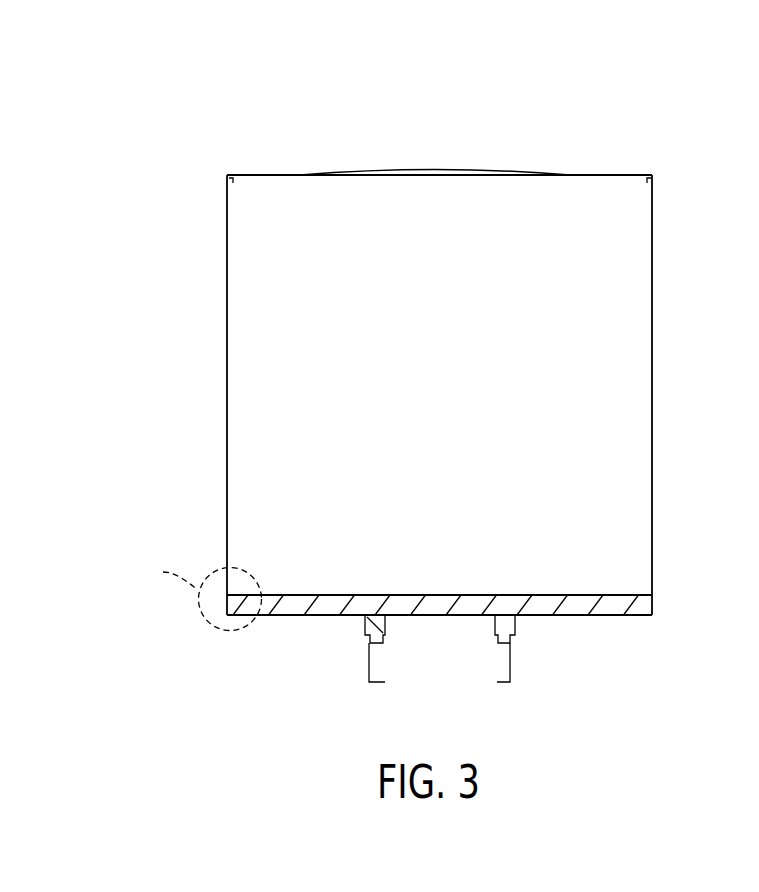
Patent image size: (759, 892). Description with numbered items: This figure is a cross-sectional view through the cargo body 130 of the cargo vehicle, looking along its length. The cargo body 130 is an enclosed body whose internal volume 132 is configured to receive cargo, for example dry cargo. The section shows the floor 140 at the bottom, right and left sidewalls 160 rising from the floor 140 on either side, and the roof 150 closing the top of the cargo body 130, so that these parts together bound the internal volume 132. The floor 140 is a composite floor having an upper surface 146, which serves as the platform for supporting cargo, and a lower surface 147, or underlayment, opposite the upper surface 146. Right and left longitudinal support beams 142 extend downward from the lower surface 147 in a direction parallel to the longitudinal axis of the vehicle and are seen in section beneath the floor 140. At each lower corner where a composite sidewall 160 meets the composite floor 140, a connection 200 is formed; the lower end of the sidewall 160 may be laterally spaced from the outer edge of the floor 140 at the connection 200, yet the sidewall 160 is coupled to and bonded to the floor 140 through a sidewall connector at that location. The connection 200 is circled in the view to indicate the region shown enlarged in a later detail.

The cargo body 130 is at (398, 388).
The internal volume 132 is at (439, 350).
The floor 140 is at (439, 614).
The longitudinal support beams 142 is at (497, 641).
The upper surface 146 is at (482, 595).
The lower surface 147 is at (318, 617).
The roof 150 is at (313, 173).
The sidewalls 160 is at (227, 375).
The connection 200 is at (240, 591).